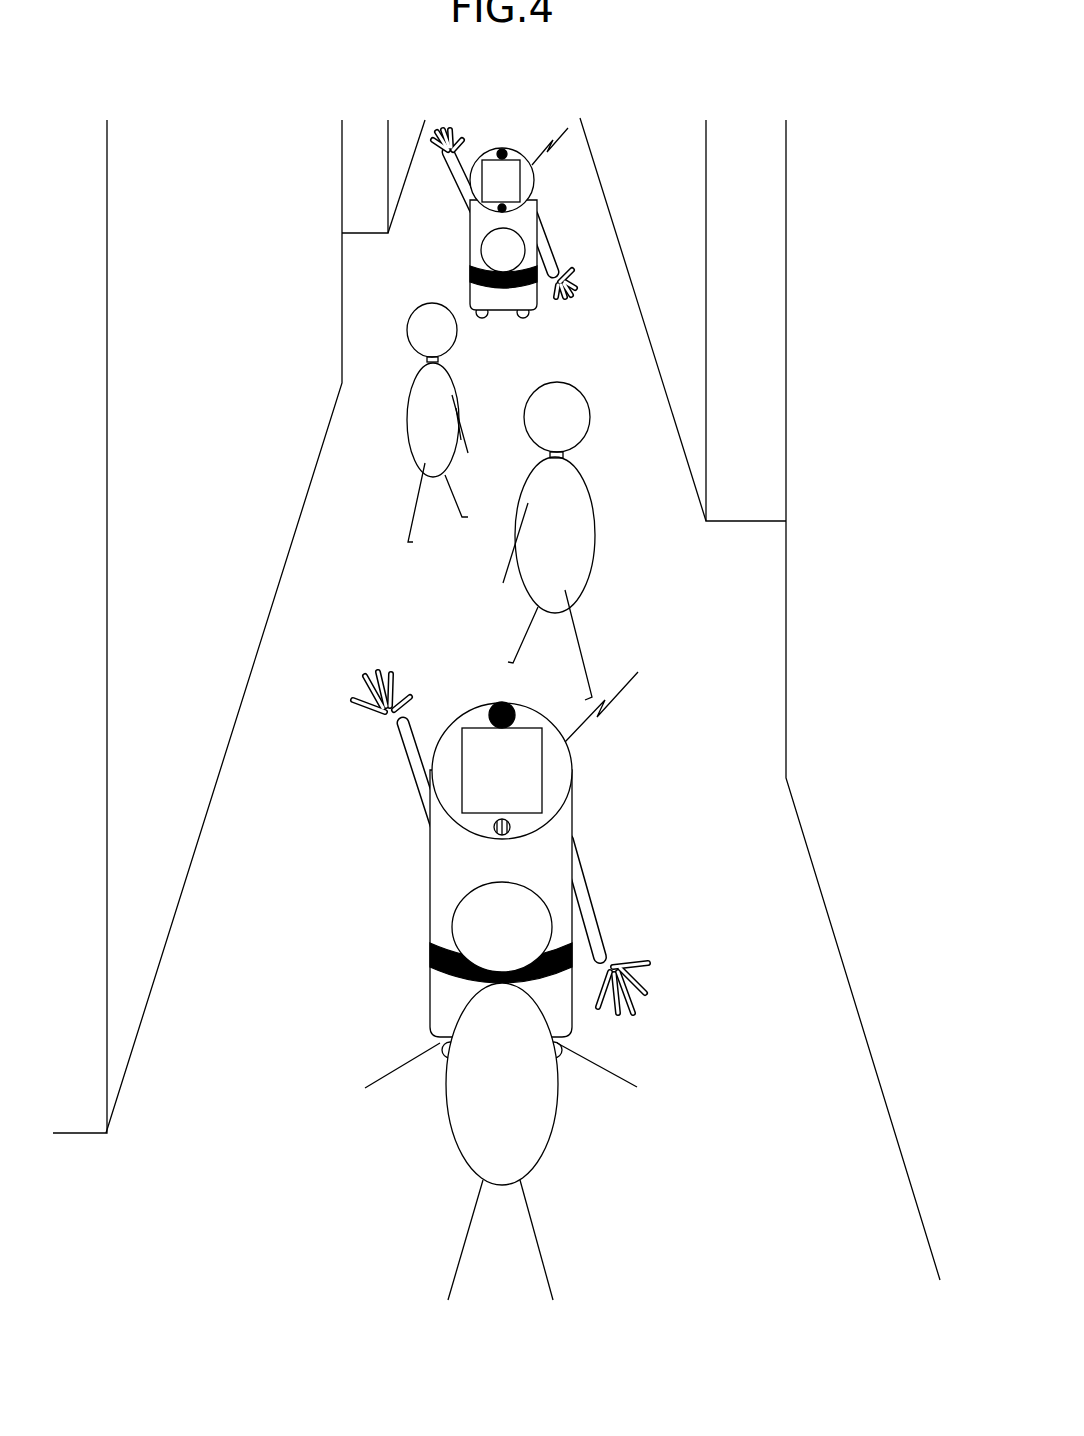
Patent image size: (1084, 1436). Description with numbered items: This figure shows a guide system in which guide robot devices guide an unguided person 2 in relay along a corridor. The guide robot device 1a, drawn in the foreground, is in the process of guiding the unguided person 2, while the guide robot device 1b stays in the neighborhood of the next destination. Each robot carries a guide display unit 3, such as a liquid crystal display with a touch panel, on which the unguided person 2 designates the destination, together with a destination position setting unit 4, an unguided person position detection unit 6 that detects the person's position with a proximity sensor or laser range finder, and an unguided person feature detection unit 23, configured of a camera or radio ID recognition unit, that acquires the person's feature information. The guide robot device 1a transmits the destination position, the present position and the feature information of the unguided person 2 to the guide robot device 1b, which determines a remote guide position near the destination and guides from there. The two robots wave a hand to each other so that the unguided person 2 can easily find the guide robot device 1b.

The guide robot device 1a is at (573, 807).
The guide robot device 1b is at (538, 200).
The unguided person 2 is at (450, 1127).
The guide display unit 3 is at (477, 727).
The destination position setting unit 4 is at (502, 837).
The unguided person position detection unit 6 is at (432, 948).
The unguided person feature detection unit 23 is at (502, 703).